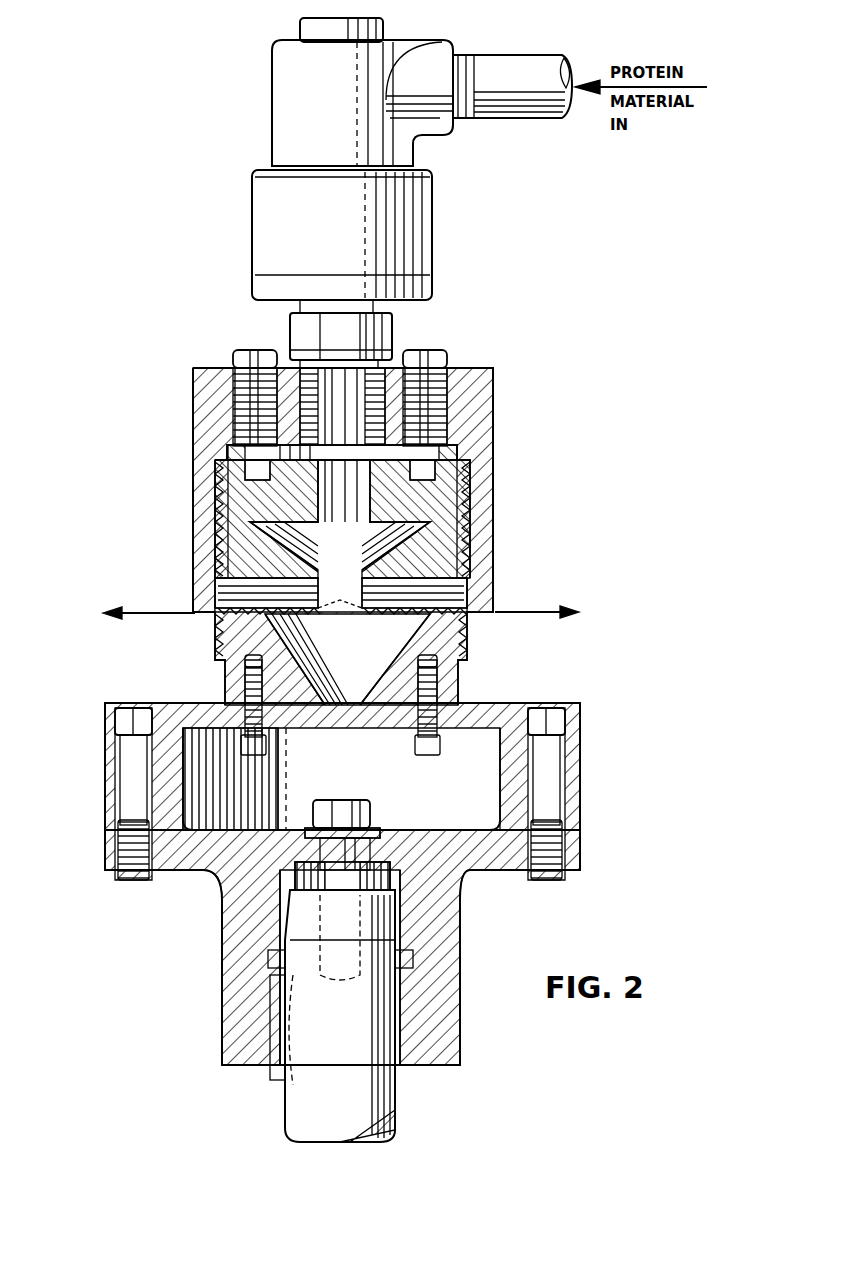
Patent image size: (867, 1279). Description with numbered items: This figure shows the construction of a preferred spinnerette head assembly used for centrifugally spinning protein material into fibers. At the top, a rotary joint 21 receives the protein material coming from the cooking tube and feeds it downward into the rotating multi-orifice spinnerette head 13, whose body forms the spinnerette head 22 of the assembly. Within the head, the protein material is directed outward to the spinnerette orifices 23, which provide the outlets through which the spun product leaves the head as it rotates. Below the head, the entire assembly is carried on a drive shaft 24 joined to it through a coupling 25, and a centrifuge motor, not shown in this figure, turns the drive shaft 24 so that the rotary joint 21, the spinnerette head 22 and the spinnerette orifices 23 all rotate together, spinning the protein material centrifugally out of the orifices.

The rotary joint 21 is at (270, 216).
The spinnerette head 13 is at (192, 385).
The spinnerette head 22 is at (202, 516).
The spinnerette orifices 23 is at (210, 620).
The coupling 25 is at (105, 746).
The drive shaft 24 is at (288, 1105).